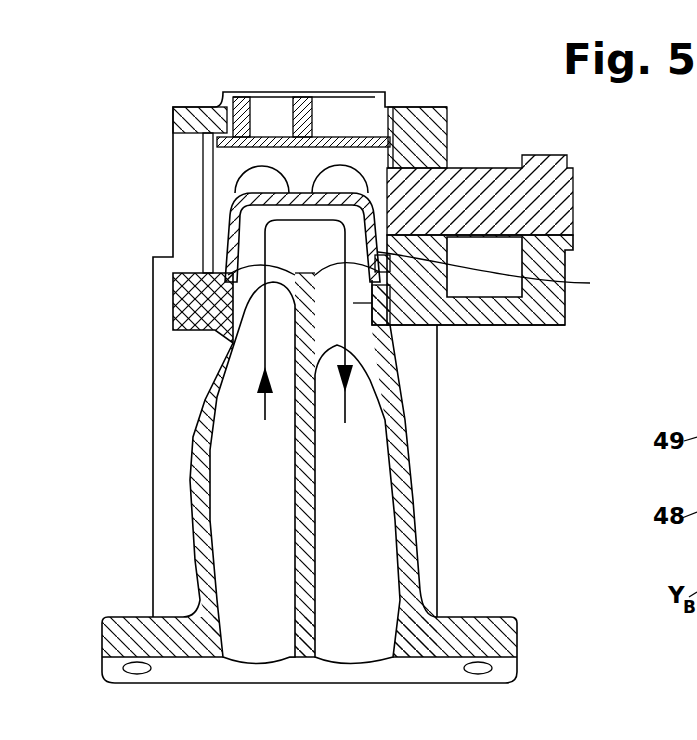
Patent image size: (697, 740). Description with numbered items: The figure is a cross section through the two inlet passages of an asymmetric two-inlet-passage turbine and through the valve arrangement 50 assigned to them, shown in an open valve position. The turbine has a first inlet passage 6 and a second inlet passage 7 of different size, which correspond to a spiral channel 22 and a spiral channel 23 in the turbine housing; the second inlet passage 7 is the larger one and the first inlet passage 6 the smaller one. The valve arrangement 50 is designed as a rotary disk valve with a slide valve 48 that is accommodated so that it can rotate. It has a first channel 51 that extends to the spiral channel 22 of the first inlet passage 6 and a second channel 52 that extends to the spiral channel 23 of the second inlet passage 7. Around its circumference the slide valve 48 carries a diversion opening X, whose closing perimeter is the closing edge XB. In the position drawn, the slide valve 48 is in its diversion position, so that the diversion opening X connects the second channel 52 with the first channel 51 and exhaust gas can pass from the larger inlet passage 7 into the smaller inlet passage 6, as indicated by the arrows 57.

The valve arrangement 50 is at (418, 90).
The slide valve 48 is at (257, 160).
The diversion opening X is at (300, 208).
The second channel 52 is at (243, 292).
The first channel 51 is at (448, 325).
The arrows 57 is at (257, 386).
The second inlet passage 7 is at (173, 473).
The spiral channel 23 is at (228, 500).
The first inlet passage 6 is at (426, 504).
The spiral channel 22 is at (365, 512).
The closing edge XB is at (503, 279).